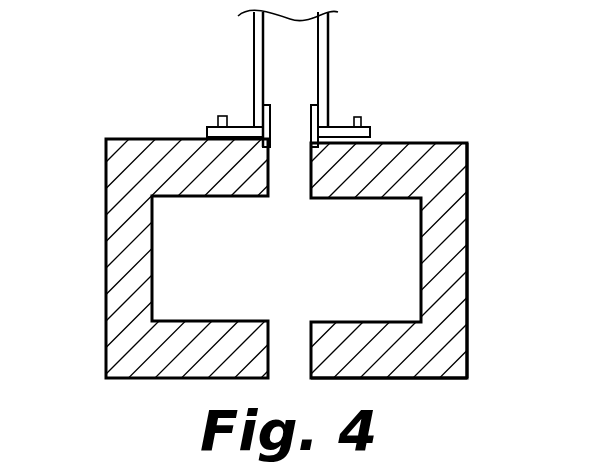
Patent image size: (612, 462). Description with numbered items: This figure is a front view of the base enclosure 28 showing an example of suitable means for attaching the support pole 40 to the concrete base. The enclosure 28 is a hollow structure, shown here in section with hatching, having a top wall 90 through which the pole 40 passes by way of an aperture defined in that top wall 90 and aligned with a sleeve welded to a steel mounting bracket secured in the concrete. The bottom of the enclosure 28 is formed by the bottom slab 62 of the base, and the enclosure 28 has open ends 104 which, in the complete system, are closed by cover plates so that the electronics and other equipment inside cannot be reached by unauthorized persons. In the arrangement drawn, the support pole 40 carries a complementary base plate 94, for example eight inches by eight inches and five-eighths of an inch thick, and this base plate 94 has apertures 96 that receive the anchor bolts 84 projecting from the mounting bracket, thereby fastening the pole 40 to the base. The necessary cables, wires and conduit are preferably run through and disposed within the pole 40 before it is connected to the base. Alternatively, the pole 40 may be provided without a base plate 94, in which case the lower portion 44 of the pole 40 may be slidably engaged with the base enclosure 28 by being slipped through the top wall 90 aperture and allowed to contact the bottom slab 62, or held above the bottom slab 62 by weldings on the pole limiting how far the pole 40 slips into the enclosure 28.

The base enclosure 28 is at (92, 257).
The support pole 40 is at (240, 40).
The lower portion 44 is at (253, 88).
The apertures 96 is at (213, 126).
The anchor bolts 84 is at (357, 117).
The base plate 94 is at (369, 127).
The top wall 90 is at (438, 150).
The open ends 104 is at (466, 279).
The bottom slab 62 is at (461, 373).